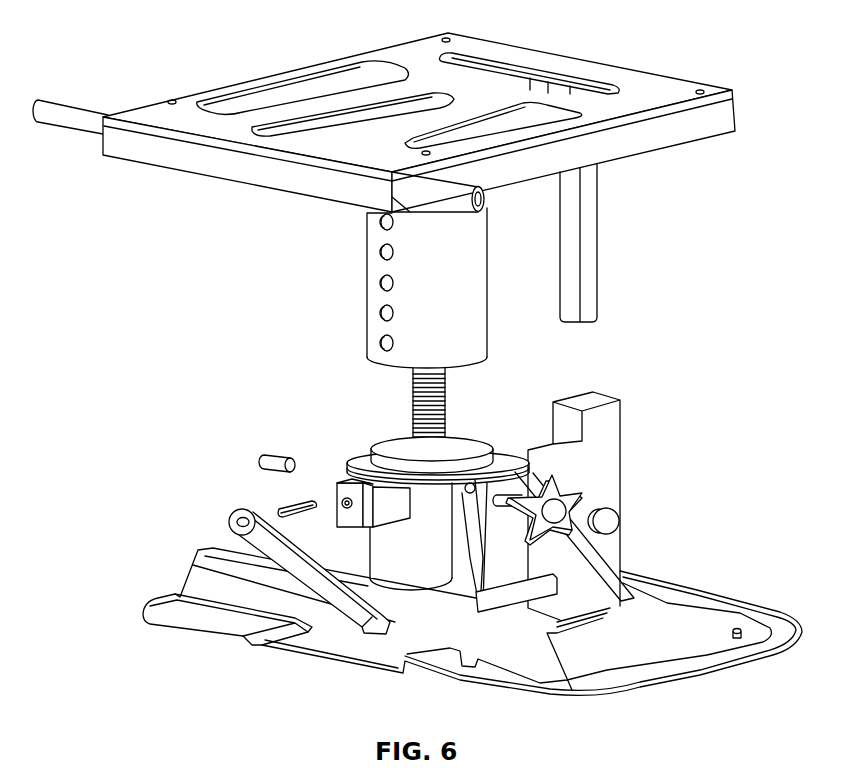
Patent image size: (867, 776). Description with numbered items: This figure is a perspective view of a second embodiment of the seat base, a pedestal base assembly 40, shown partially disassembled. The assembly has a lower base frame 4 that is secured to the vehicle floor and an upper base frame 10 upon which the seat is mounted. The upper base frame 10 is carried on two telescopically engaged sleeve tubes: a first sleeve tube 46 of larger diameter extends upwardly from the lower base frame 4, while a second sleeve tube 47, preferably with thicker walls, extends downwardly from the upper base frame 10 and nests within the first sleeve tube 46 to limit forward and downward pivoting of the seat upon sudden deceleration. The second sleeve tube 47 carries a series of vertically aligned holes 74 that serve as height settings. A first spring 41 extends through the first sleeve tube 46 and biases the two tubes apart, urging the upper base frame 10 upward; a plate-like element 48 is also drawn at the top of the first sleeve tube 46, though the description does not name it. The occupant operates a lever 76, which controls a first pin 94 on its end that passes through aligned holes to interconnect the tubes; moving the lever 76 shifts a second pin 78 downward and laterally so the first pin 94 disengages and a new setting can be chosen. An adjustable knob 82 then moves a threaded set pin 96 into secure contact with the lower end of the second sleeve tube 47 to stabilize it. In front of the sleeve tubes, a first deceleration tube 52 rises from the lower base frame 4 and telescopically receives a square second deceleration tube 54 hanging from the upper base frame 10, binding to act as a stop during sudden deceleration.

The pedestal base assembly 40 is at (175, 41).
The upper base frame 10 is at (732, 92).
The vertically aligned holes 74 is at (381, 223).
The second sleeve tube 47 is at (396, 288).
The second deceleration tube 54 is at (591, 253).
The first spring 41 is at (412, 402).
The clamp plate 48 is at (341, 454).
The second pin 78 is at (283, 452).
The first pin 94 is at (297, 502).
The lever 76 is at (229, 513).
The set pin 96 is at (515, 472).
The first deceleration tube 52 is at (603, 438).
The adjustable knob 82 is at (584, 494).
The first sleeve tube 46 is at (427, 568).
The lower base frame 4 is at (677, 658).